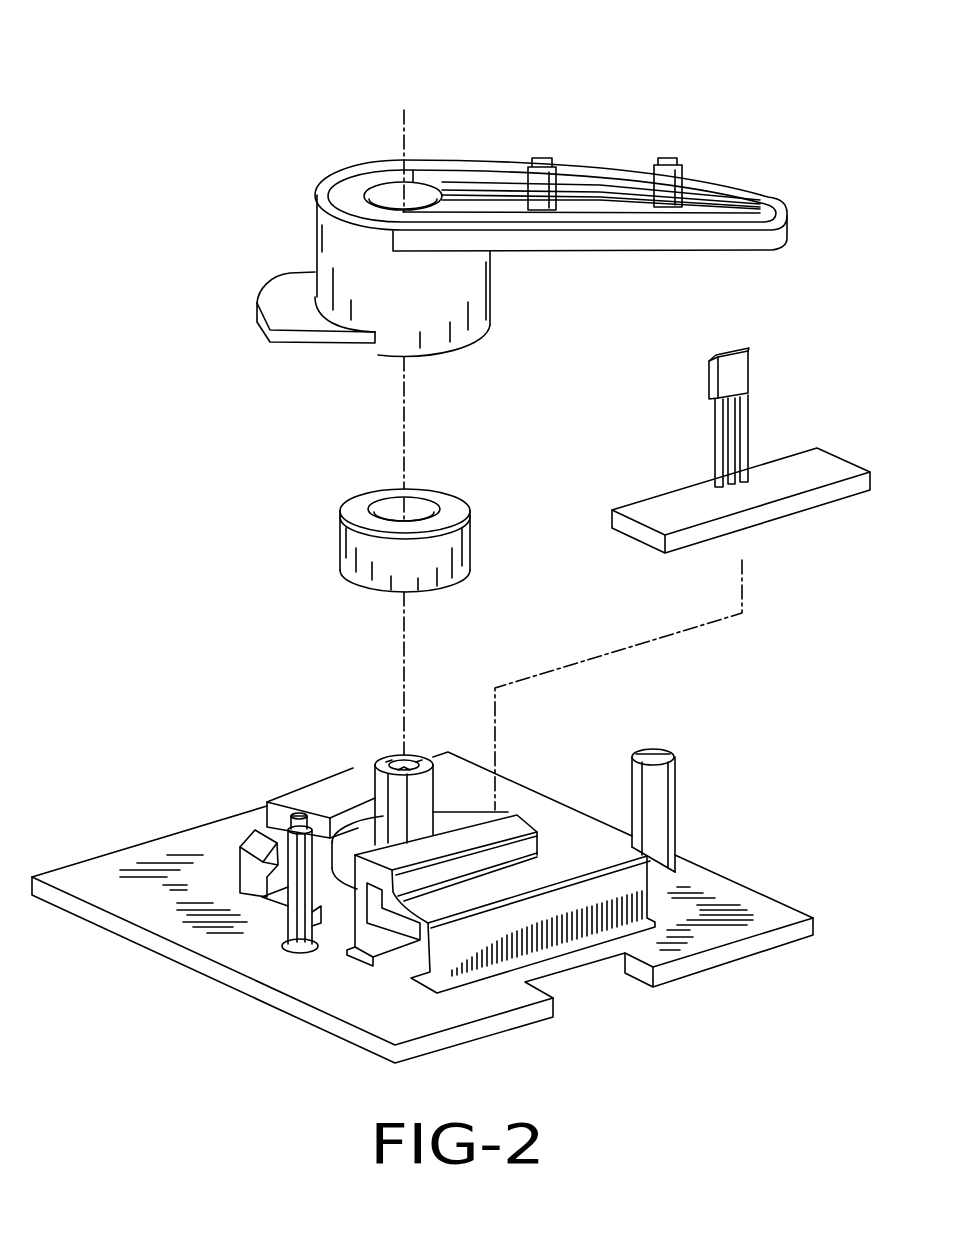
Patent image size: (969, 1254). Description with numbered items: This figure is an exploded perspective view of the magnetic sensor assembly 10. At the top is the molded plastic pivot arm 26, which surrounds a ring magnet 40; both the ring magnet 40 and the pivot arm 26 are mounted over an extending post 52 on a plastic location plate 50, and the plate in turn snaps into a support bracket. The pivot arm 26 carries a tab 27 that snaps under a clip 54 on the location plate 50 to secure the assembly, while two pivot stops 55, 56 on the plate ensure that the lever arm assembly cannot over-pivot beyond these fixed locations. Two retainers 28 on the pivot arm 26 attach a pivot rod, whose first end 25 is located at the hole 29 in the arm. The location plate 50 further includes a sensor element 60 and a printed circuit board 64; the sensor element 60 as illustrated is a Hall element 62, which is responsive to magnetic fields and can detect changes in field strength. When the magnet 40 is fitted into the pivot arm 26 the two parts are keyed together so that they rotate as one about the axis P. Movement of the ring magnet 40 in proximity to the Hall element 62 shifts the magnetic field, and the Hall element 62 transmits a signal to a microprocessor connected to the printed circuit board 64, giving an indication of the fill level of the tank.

The sensor assembly 10 is at (97, 114).
The axis P is at (402, 110).
The first end 25 is at (388, 200).
The pivot arm 26 is at (735, 191).
The tab 27 is at (289, 297).
The retainers 28 is at (546, 176).
The hole 29 is at (424, 203).
The ring magnet 40 is at (357, 497).
The location plate 50 is at (752, 900).
The post 52 is at (382, 796).
The clip 54 is at (251, 842).
The pivot stop 55 is at (651, 797).
The pivot stop 56 is at (297, 883).
The sensor element 60 is at (710, 346).
The Hall element 62 is at (742, 386).
The printed circuit board 64 is at (652, 510).